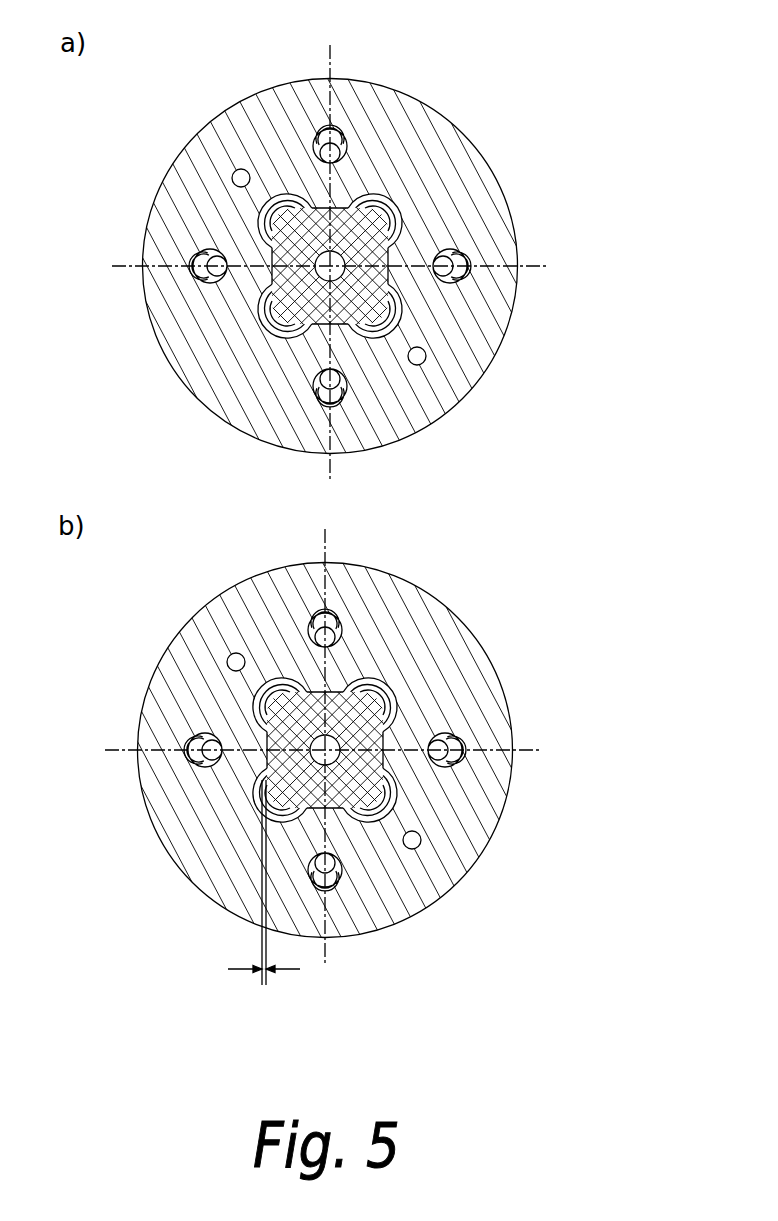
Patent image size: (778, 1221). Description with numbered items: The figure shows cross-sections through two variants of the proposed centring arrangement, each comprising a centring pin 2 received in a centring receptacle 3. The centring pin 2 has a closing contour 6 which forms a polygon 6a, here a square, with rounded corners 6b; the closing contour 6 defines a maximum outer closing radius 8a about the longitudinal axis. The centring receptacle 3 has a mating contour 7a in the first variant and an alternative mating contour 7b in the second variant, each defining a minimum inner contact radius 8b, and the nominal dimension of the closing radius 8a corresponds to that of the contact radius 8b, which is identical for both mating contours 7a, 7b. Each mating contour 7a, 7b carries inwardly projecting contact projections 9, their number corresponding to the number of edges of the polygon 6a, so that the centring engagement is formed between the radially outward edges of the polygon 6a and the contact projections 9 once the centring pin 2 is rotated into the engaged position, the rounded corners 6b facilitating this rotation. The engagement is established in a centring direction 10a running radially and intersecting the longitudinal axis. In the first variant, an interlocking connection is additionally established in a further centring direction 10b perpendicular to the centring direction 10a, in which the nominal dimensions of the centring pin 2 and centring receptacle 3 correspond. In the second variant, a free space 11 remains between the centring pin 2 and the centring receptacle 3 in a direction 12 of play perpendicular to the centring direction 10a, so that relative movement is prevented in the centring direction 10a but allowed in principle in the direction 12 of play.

In FIG. 5a, the centring pin 2 is at (446, 206).
In FIG. 5b, the centring pin 2 is at (441, 690).
In FIG. 5a, the centring receptacle 3 is at (45, 181).
In FIG. 5b, the centring receptacle 3 is at (364, 759).
In FIG. 5a, the closing contour 6 is at (446, 206).
In FIG. 5b, the closing contour 6 is at (441, 690).
In FIG. 5a, the polygon 6a is at (446, 206).
In FIG. 5b, the polygon 6a is at (441, 690).
In FIG. 5a, the rounded corners 6b is at (445, 234).
In FIG. 5b, the rounded corners 6b is at (440, 718).
In FIG. 5a, the mating contour 7a is at (330, 181).
In FIG. 5b, the mating contour 7b is at (325, 665).
In FIG. 5a, the closing radius 8a is at (452, 288).
In FIG. 5b, the closing radius 8a is at (447, 772).
In FIG. 5a, the contact radius 8b is at (452, 288).
In FIG. 5b, the contact radius 8b is at (447, 772).
In FIG. 5a, the contact projections 9 is at (217, 303).
In FIG. 5b, the contact projections 9 is at (212, 787).
In FIG. 5a, the centring direction 10a is at (265, 254).
In FIG. 5b, the centring direction 10a is at (260, 736).
In FIG. 5a, the further centring direction 10b is at (385, 240).
In FIG. 5b, the free space 11 is at (221, 882).
In FIG. 5b, the direction of play 12 is at (370, 724).